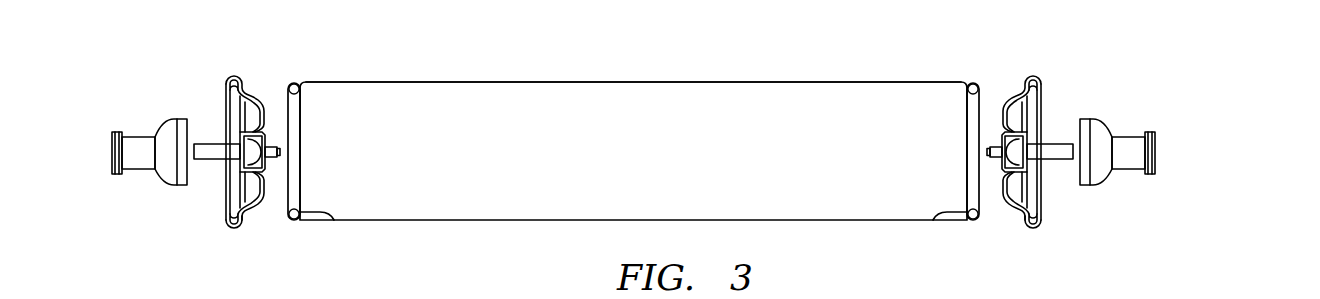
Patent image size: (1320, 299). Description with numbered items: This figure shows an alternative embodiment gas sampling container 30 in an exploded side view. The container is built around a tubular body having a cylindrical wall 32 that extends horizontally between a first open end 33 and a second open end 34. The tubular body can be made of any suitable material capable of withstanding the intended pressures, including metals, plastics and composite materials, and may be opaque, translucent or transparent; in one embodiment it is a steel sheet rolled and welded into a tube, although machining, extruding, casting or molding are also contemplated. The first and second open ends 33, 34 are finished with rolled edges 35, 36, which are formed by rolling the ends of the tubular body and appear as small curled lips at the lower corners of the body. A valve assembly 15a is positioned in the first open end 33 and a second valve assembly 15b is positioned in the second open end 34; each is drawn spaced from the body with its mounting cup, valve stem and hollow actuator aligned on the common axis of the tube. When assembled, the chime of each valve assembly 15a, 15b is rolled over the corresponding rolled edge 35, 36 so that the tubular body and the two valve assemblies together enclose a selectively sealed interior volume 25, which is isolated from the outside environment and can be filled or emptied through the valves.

The valve assembly 15a is at (211, 116).
The valve assembly 15b is at (1055, 113).
The interior volume 25 is at (610, 163).
The gas sampling container 30 is at (330, 58).
The cylindrical wall 32 is at (730, 82).
The first open end 33 is at (296, 138).
The second open end 34 is at (971, 138).
The rolled edge 35 is at (318, 219).
The rolled edge 36 is at (949, 219).